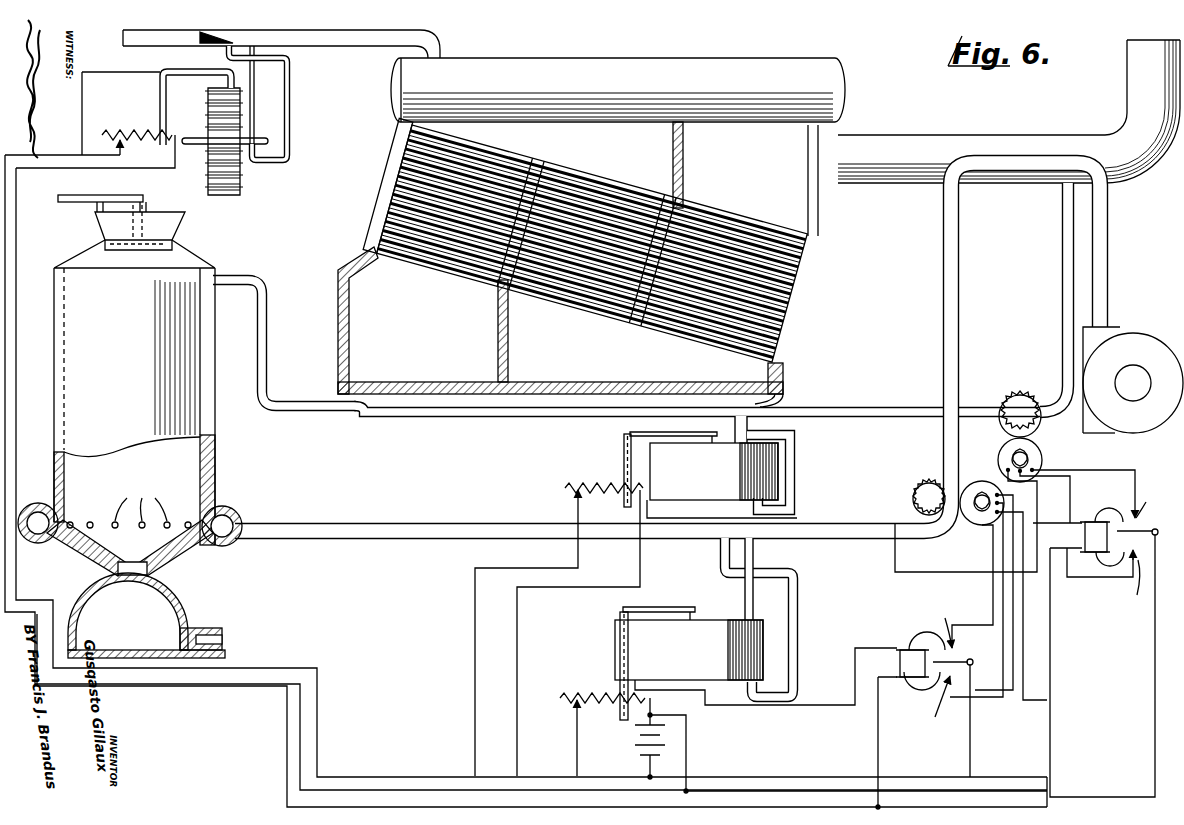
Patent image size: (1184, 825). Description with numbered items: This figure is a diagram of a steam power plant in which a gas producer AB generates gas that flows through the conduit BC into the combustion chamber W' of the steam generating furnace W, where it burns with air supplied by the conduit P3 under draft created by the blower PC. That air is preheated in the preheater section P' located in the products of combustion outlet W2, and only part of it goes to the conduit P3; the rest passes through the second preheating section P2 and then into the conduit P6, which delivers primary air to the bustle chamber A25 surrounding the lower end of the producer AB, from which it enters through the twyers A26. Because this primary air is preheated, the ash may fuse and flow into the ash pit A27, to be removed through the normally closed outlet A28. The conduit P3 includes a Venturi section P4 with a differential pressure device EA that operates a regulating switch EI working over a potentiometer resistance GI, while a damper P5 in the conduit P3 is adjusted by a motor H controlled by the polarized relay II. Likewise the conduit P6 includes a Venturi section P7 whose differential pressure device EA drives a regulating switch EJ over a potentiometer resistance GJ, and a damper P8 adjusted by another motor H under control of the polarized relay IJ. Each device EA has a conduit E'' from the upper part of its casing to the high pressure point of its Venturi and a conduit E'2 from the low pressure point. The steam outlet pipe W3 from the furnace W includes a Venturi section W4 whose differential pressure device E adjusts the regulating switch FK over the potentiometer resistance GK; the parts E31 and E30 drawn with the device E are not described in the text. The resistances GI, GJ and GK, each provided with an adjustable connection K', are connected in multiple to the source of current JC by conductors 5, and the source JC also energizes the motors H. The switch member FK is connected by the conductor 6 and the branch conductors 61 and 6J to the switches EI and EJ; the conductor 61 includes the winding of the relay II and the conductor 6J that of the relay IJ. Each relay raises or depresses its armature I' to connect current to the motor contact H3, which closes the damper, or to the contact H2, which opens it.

The conductor 6 is at (526, 439).
The regulating switch FK is at (158, 97).
The potentiometer resistance GK is at (132, 129).
The differential pressure device E is at (224, 120).
The pipe E31 is at (258, 92).
The pipe E30 is at (289, 127).
The Venturi tube section W4 is at (222, 43).
The steam outlet pipe W3 is at (343, 38).
The steam generating furnace W is at (569, 170).
The combustion chamber W' is at (560, 320).
The products of combustion outlet W2 is at (863, 147).
The second preheating section P2 is at (970, 154).
The preheater section P' is at (1056, 263).
The blower PC is at (1128, 360).
The conduit P6 is at (958, 318).
The damper P5 is at (1018, 418).
The Venturi section P4 is at (798, 400).
The conduit P3 is at (865, 416).
The low pressure conduit E'2 is at (786, 556).
The reversible electric motor H is at (978, 480).
The damper P8 is at (930, 501).
The motor terminal contact H3 is at (1042, 567).
The relay armature I' is at (1051, 585).
The polarized relay II is at (1087, 555).
The motor terminal contact H2 is at (1030, 648).
The branch conductor 61 is at (1025, 633).
The polarized relay IJ is at (903, 655).
The branch conductor 6J is at (878, 722).
The high pressure conduit E'' is at (775, 511).
The differential pressure device EA is at (756, 574).
The regulating switch EI is at (624, 447).
The potentiometer resistance GI is at (595, 482).
The adjustable connection K' is at (557, 633).
The Venturi section P7 is at (712, 544).
The regulating switch EJ is at (617, 645).
The potentiometer resistance GJ is at (583, 692).
The source of current JC is at (632, 745).
The conductors 5 is at (735, 792).
The conduit BC is at (262, 355).
The gas producer AB is at (192, 423).
The twyers A26 is at (129, 503).
The bustle chamber A25 is at (230, 513).
The ash pit A27 is at (158, 612).
The normally closed outlet A28 is at (222, 638).